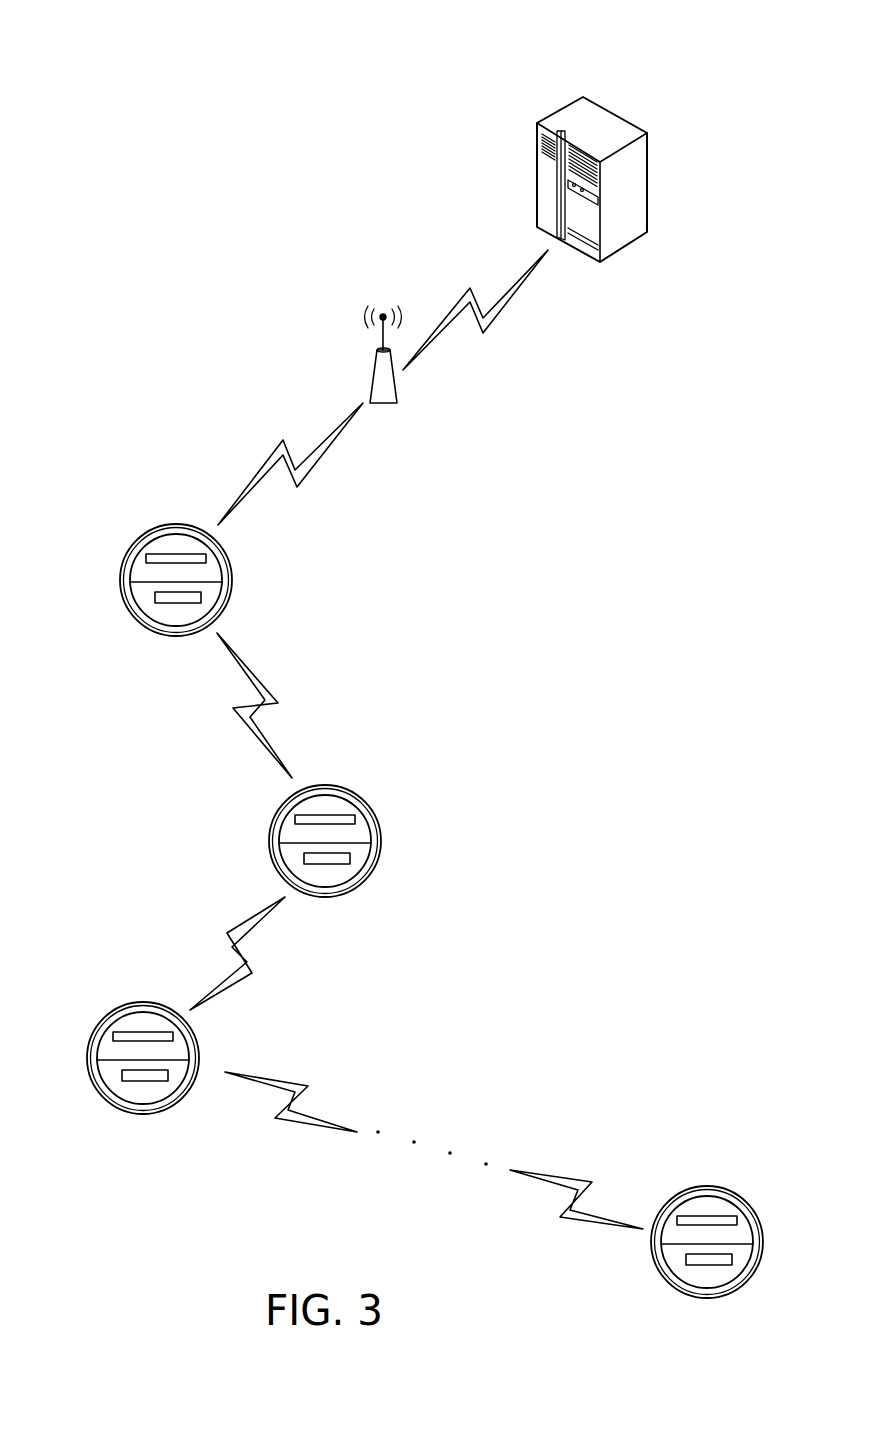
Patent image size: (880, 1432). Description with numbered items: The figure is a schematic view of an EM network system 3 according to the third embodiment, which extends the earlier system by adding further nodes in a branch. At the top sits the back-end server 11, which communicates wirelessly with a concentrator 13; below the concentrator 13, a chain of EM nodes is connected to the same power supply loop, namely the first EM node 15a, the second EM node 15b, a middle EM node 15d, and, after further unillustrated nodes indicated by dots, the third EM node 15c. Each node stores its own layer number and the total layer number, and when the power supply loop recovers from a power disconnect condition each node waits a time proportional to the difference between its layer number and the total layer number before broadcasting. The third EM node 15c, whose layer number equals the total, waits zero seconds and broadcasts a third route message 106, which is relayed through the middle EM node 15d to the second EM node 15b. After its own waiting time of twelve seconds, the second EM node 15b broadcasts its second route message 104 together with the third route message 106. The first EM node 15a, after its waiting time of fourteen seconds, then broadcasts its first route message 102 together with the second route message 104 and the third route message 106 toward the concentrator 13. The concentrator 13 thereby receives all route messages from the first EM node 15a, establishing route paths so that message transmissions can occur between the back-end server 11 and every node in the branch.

The EM network system 3 is at (340, 89).
The back-end server 11 is at (615, 117).
The concentrator 13 is at (388, 404).
The first EM node 15a is at (142, 537).
The second EM node 15b is at (272, 852).
The third EM node 15c is at (652, 1258).
The middle EM node 15d is at (92, 1070).
The first route message 102 is at (308, 475).
The second route message 104 is at (263, 682).
The third route message 106 is at (257, 960).